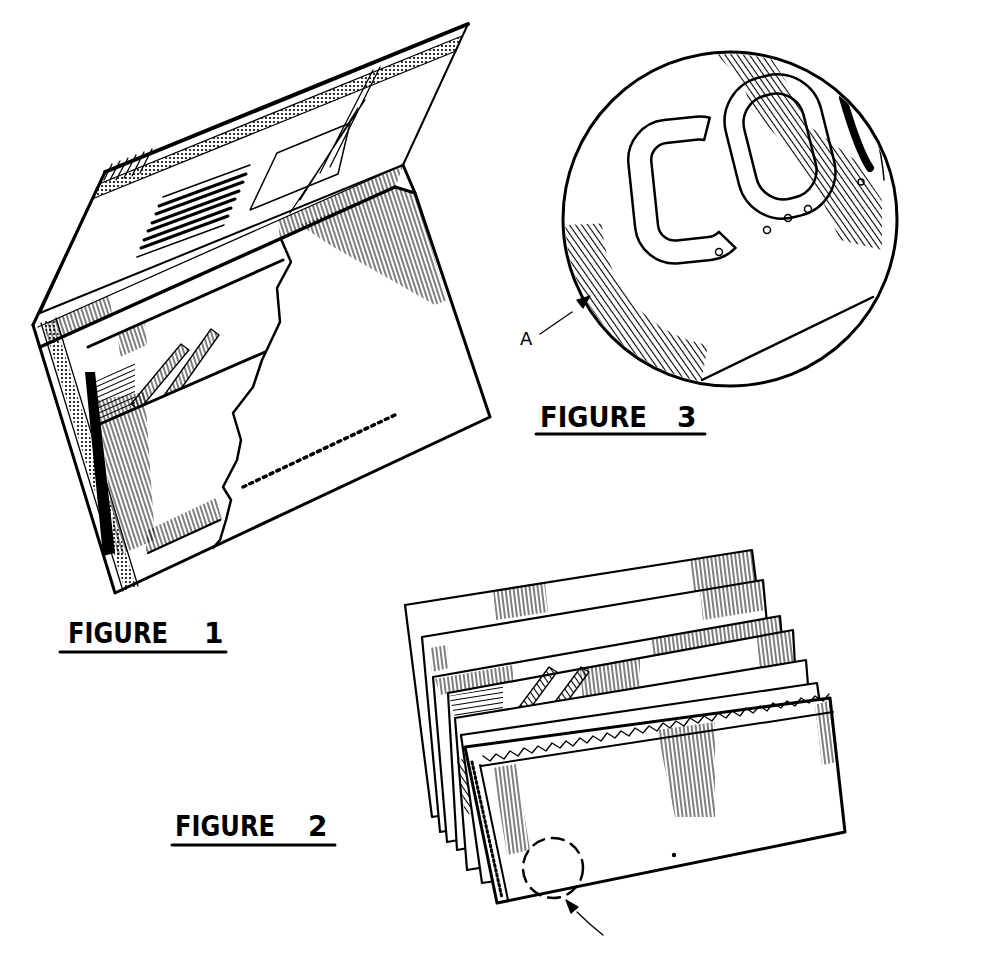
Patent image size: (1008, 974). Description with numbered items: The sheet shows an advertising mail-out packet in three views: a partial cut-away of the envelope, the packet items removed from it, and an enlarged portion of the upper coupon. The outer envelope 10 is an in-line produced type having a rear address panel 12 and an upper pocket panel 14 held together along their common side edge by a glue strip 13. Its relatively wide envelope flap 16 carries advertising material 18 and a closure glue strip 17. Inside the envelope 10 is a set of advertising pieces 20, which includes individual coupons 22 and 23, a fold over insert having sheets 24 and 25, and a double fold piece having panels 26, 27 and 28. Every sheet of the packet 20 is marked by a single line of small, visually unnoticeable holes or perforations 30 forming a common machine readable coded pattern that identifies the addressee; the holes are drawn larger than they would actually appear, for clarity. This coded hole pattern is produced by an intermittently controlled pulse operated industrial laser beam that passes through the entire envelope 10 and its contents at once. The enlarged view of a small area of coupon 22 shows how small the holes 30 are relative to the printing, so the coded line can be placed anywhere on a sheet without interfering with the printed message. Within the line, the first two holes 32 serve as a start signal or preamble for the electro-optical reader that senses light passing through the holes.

In FIG. 1, the outer envelope 10 is at (122, 140).
In FIG. 1, the rear address panel 12 is at (36, 320).
In FIG. 1, the glue strip 13 is at (103, 553).
In FIG. 1, the upper pocket panel 14 is at (432, 276).
In FIG. 1, the envelope flap 16 is at (418, 107).
In FIG. 1, the closure glue strip 17 is at (300, 108).
In FIG. 1, the advertising material 18 is at (150, 231).
In FIG. 1, the advertising pieces 20 is at (217, 371).
In FIG. 2, the advertising pieces 20 is at (587, 721).
In FIG. 1, the coupon 22 is at (230, 413).
In FIG. 2, the coupon 22 is at (615, 823).
In FIG. 3, the coupon 22 is at (800, 322).
In FIG. 2, the coupon 23 is at (453, 852).
In FIG. 1, the sheet of fold over insert 24 is at (285, 326).
In FIG. 2, the sheet of fold over insert 24 is at (457, 790).
In FIG. 2, the sheet of fold over insert 25 is at (443, 744).
In FIG. 1, the panel of double fold piece 26 is at (282, 284).
In FIG. 2, the panel of double fold piece 26 is at (413, 676).
In FIG. 2, the panel of double fold piece 27 is at (452, 635).
In FIG. 1, the panel of double fold piece 28 is at (133, 305).
In FIG. 2, the panel of double fold piece 28 is at (528, 590).
In FIG. 1, the holes or perforations 30 is at (337, 420).
In FIG. 2, the holes or perforations 30 is at (683, 866).
In FIG. 3, the holes or perforations 30 is at (756, 248).
In FIG. 2, the first two holes 32 is at (727, 847).
In FIG. 3, the first two holes 32 is at (786, 230).